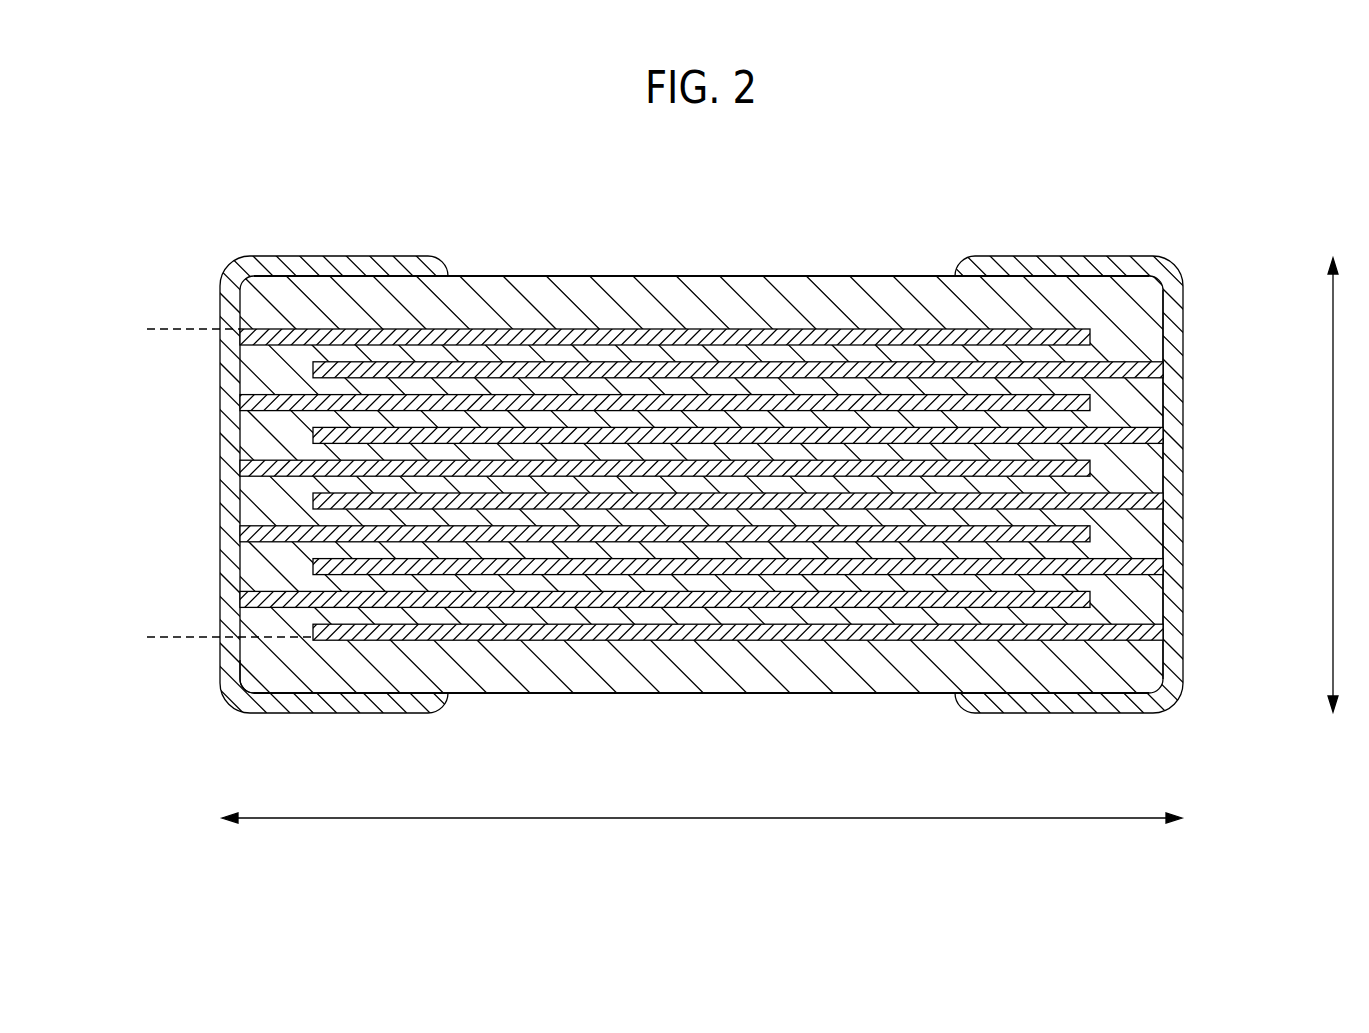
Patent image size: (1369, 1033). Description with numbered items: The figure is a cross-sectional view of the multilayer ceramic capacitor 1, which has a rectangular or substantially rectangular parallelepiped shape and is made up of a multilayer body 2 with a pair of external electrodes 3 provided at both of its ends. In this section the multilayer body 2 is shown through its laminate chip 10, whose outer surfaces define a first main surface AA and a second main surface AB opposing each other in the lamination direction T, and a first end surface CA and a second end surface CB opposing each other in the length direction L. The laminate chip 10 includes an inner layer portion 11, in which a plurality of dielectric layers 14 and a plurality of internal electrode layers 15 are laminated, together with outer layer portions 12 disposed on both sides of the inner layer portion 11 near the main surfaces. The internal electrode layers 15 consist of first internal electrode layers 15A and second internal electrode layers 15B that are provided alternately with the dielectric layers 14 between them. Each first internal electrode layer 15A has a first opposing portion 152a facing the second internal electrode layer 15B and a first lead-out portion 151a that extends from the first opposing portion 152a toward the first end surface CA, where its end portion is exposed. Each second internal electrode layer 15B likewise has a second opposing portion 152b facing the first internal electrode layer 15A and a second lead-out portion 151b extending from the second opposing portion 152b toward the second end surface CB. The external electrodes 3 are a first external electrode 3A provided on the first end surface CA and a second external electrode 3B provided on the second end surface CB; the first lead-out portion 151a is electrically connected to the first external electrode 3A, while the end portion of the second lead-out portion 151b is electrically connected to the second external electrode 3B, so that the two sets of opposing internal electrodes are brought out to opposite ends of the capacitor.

The multilayer ceramic capacitor 1 is at (1180, 203).
The multilayer body 2 is at (680, 262).
The external electrode 3 is at (684, 459).
The first external electrode 3A is at (233, 263).
The second external electrode 3B is at (1172, 262).
The laminate chip 10 is at (793, 276).
The inner layer portion 11 is at (152, 329).
The outer layer portion 12 is at (249, 314).
The dielectric layer 14 is at (457, 387).
The internal electrode layer 15 is at (684, 385).
The first internal electrode layer 15A is at (465, 175).
The second internal electrode layer 15B is at (1143, 175).
The first lead-out portion 151a is at (282, 338).
The first opposing portion 152a is at (399, 338).
The second lead-out portion 151b is at (1145, 367).
The second opposing portion 152b is at (1033, 372).
The first main surface AA is at (906, 276).
The second main surface AB is at (902, 693).
The first end surface CA is at (221, 652).
The second end surface CB is at (1162, 588).
The length direction L is at (702, 835).
The lamination direction T is at (1345, 485).